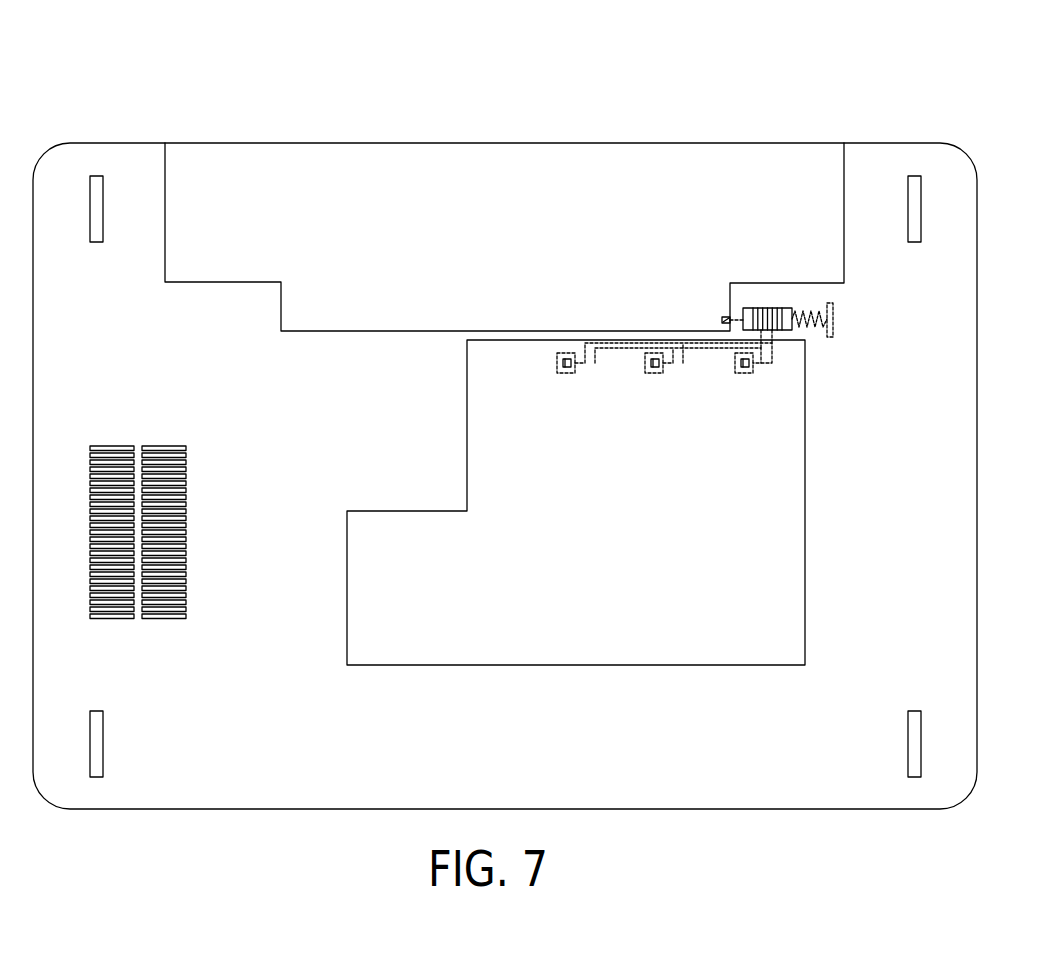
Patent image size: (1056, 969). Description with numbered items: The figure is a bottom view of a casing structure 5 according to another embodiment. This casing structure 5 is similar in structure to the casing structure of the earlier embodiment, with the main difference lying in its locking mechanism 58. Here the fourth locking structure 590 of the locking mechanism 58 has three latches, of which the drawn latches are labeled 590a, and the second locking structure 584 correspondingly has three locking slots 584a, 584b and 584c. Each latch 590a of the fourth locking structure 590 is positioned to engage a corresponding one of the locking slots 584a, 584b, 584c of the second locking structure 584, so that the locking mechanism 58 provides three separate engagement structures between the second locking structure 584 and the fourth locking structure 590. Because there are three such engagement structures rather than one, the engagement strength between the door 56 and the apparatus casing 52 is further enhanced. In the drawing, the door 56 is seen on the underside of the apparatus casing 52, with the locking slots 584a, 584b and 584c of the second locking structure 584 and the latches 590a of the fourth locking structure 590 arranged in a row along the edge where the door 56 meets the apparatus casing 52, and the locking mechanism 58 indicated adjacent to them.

The casing structure 5 is at (884, 77).
The apparatus casing 52 is at (930, 375).
The door 56 is at (790, 573).
The locking mechanism 58 is at (775, 303).
The second locking structure 584 is at (782, 117).
The locking slot 584a is at (562, 352).
The locking slot 584b is at (651, 352).
The locking slot 584c is at (739, 352).
The fourth locking structure 590 is at (795, 427).
The latch 590a is at (584, 364).